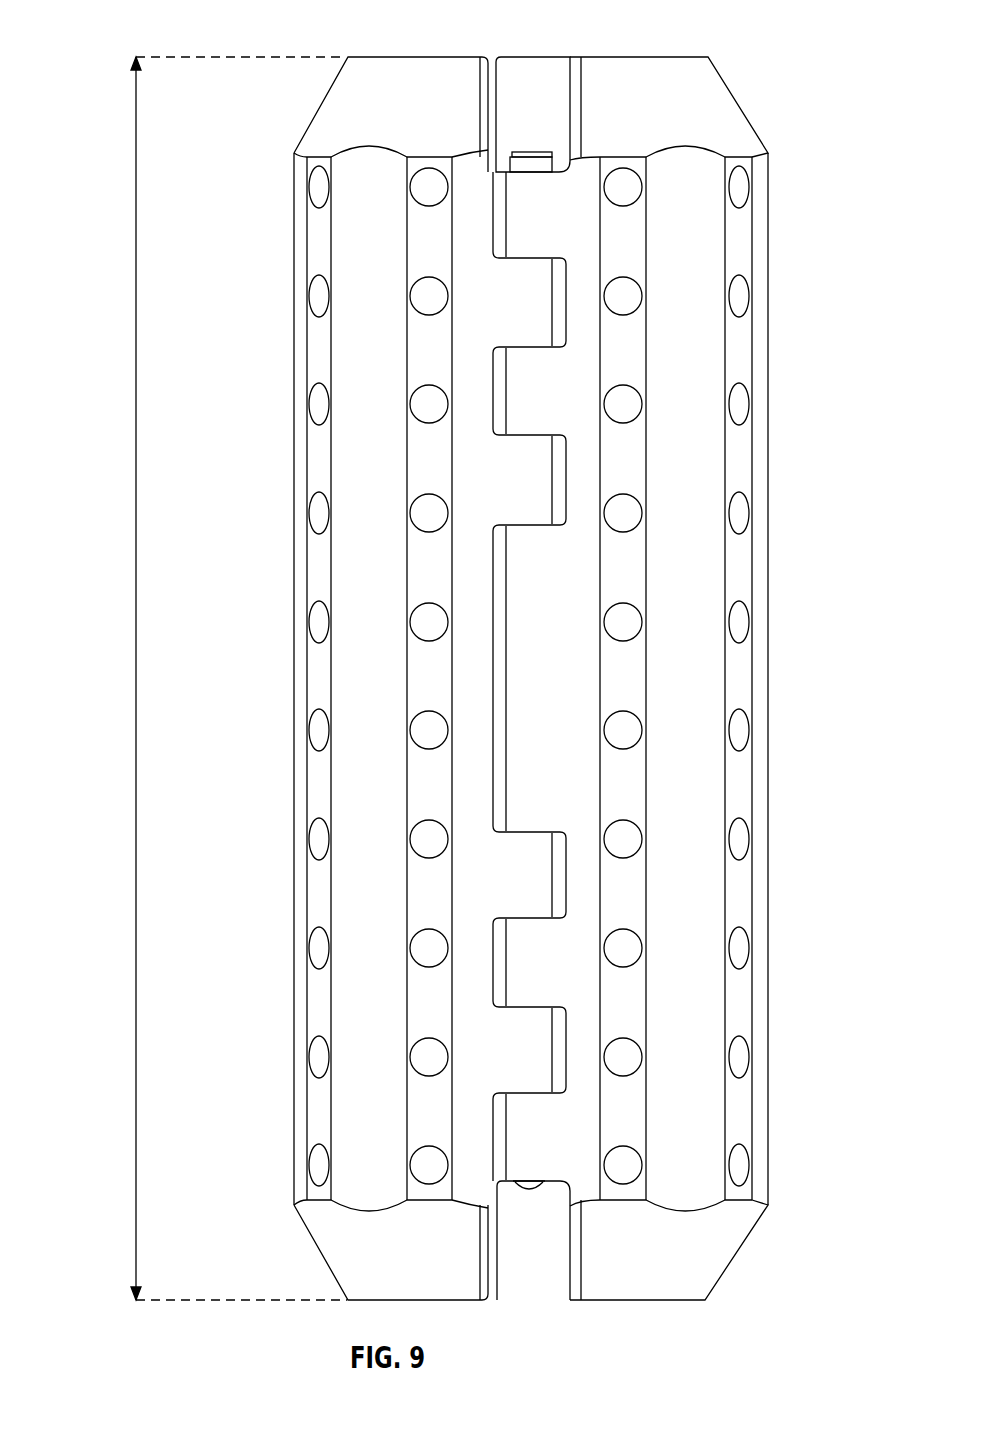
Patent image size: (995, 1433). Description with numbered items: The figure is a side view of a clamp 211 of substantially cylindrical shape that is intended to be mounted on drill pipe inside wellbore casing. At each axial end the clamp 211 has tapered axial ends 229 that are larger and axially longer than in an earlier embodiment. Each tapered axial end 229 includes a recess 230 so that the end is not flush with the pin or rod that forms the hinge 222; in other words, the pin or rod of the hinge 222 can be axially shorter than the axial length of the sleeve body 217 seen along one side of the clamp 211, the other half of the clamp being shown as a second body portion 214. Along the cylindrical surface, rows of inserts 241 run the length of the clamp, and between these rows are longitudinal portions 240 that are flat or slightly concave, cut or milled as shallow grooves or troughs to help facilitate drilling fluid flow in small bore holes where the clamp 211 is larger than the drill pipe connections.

The clamp 211 is at (137, 27).
The recess 230 is at (532, 78).
The tapered axial ends 229 is at (708, 100).
The hinge 222 is at (517, 152).
The first body half 214 is at (297, 440).
The sleeve body 217 is at (758, 362).
The longitudinal portions 240 is at (345, 1082).
The inserts 241 is at (740, 192).